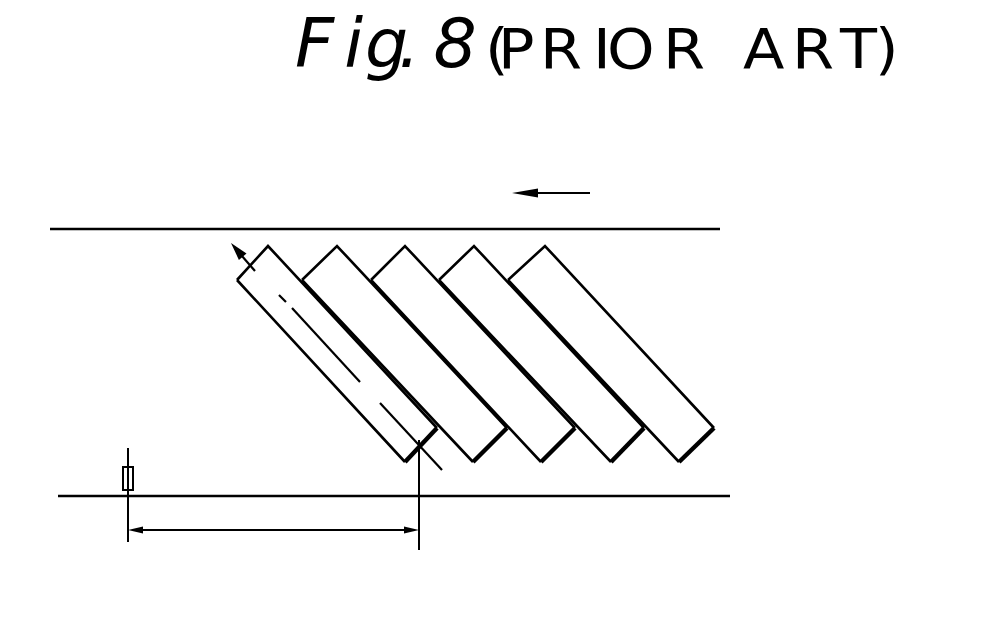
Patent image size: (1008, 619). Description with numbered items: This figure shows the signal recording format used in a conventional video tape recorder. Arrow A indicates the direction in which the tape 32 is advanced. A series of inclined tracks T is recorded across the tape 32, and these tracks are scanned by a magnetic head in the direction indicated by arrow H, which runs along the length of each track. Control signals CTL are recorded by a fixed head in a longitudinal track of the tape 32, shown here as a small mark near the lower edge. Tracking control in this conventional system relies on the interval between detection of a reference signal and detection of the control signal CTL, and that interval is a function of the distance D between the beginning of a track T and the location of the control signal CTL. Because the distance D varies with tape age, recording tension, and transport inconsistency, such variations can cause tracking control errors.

The tape 32 is at (683, 229).
The inclined tracks T is at (248, 292).
The arrow indicating head scanning direction H is at (367, 387).
The arrow indicating tape advance direction A is at (558, 193).
The control signals CTL is at (143, 477).
The distance between beginning of track and control signal D is at (258, 531).